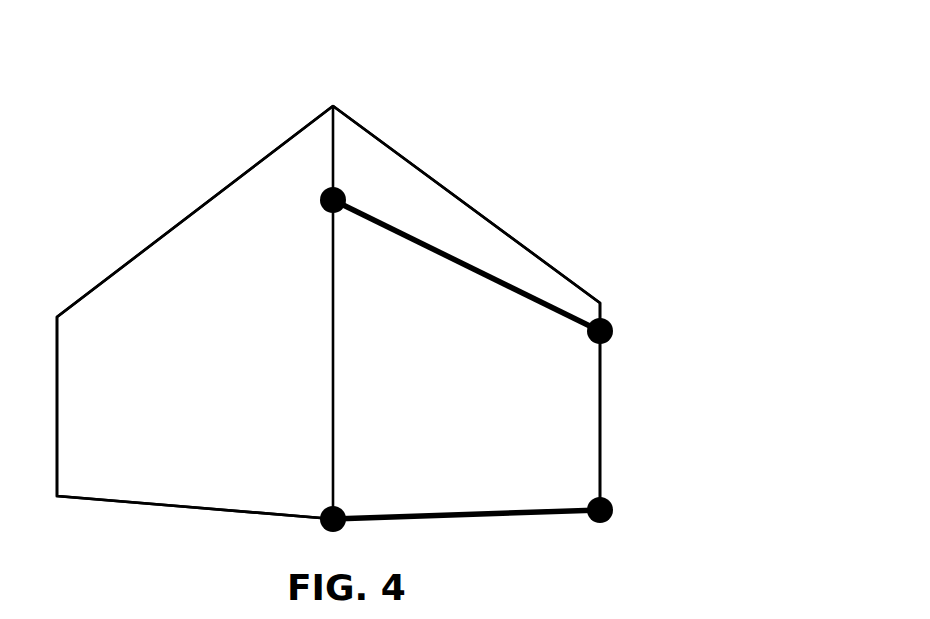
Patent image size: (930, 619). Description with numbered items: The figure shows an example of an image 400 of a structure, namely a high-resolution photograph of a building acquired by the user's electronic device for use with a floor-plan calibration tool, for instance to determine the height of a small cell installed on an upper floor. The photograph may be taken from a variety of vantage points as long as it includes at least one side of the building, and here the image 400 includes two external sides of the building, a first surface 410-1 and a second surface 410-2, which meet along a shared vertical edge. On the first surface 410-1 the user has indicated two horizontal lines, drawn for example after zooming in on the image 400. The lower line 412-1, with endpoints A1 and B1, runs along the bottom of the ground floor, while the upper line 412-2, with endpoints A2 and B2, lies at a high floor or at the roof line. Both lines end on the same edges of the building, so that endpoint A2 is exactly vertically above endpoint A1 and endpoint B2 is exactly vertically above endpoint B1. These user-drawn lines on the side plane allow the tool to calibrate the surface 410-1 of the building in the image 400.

The image 400 is at (580, 69).
The surface 410-1 is at (422, 345).
The surface 410-2 is at (215, 350).
The line 412-1 is at (405, 513).
The line 412-2 is at (525, 292).
The endpoint A1 is at (326, 510).
The endpoint A2 is at (323, 192).
The endpoint B1 is at (607, 499).
The endpoint B2 is at (610, 324).